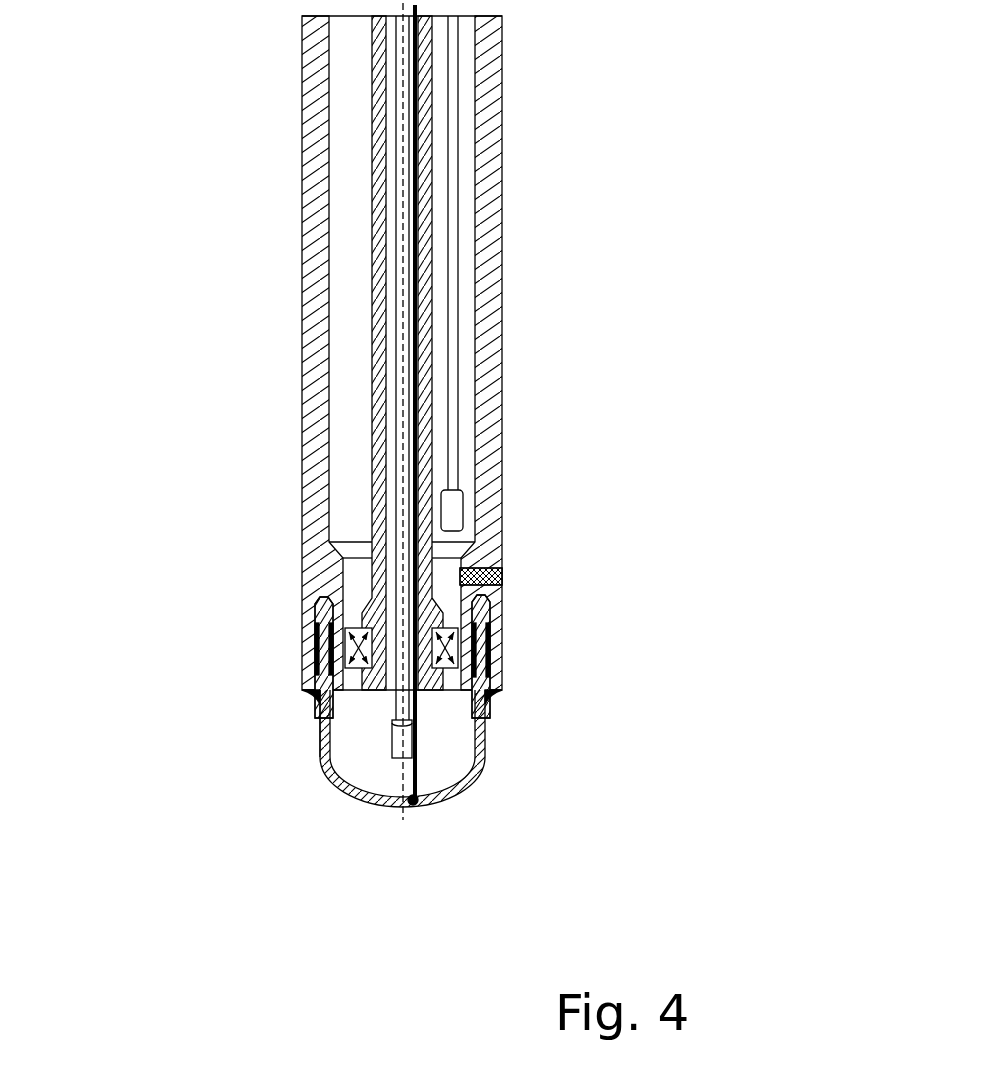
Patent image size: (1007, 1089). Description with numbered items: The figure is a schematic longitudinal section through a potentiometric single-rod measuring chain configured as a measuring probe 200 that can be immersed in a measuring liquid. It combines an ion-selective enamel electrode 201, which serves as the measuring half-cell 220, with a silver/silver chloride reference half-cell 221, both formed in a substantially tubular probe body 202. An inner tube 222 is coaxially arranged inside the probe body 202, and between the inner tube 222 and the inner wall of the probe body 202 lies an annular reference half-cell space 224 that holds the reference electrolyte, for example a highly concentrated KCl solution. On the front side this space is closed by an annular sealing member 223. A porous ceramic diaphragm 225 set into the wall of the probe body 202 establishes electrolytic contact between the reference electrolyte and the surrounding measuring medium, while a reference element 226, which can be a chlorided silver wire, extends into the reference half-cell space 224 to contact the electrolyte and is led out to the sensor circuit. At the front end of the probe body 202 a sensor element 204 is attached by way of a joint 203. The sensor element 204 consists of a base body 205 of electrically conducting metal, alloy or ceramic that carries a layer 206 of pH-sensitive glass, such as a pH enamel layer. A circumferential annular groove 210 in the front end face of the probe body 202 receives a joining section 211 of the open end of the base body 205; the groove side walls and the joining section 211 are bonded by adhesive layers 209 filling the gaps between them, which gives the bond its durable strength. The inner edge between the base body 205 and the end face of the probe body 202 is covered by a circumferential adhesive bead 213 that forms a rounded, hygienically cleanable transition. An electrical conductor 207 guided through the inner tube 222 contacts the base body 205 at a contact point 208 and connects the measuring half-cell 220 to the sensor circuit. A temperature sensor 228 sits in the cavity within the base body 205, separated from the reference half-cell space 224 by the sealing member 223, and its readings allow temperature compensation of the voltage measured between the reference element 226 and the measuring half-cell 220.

The measuring probe 200 is at (635, 193).
The ion-selective enamel electrode 201 is at (343, 803).
The probe body 202 is at (313, 407).
The joint 203 is at (510, 623).
The sensor element 204 is at (485, 742).
The base body 205 is at (337, 785).
The layer 206 is at (473, 777).
The electrical conductor 207 is at (416, 152).
The contact point 208 is at (417, 802).
The adhesive layer 209 is at (317, 652).
The annular groove 210 is at (317, 618).
The joining section 211 is at (495, 642).
The adhesive bead 213 is at (301, 690).
The measuring half-cell 220 is at (327, 758).
The reference half-cell 221 is at (490, 313).
The inner tube 222 is at (373, 217).
The sealing member 223 is at (493, 655).
The reference half-cell space 224 is at (348, 300).
The porous ceramic diaphragm 225 is at (502, 575).
The reference element 226 is at (455, 450).
The temperature sensor 228 is at (392, 758).